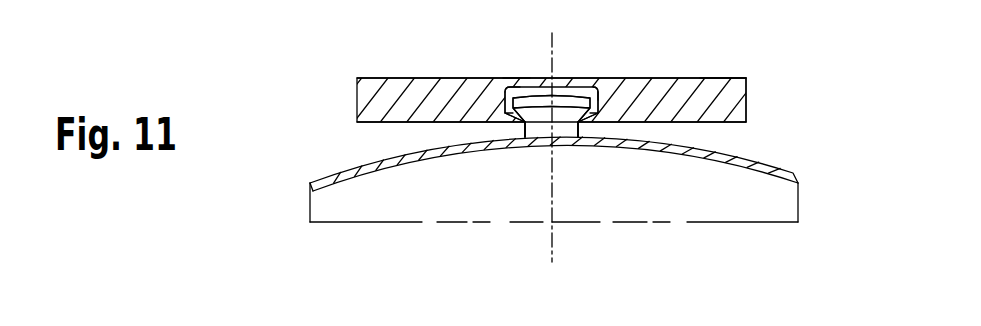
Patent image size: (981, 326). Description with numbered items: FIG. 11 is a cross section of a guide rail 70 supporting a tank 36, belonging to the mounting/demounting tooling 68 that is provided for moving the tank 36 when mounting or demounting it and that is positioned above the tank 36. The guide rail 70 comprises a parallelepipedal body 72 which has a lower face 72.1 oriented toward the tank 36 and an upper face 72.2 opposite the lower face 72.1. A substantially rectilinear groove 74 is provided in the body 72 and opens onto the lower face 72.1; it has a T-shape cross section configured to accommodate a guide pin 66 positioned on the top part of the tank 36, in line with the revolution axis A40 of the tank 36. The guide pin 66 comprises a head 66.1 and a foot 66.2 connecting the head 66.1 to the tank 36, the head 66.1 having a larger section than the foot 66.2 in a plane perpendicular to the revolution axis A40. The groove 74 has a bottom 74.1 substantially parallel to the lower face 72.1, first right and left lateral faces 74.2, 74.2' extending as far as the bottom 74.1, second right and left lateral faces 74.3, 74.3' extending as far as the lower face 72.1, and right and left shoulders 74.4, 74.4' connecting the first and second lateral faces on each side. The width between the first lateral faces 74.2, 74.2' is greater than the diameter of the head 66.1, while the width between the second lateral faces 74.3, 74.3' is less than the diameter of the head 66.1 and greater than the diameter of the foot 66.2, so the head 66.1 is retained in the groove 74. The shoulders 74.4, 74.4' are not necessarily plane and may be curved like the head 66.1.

The parallelepipedal body 72 is at (373, 110).
The lower face 72.1 is at (372, 128).
The upper face 72.2 is at (378, 79).
The groove 74 is at (612, 96).
The bottom 74.1 is at (517, 80).
The first right lateral face 74.2 is at (632, 62).
The first left lateral face 74.2' is at (462, 67).
The second right lateral face 74.3 is at (615, 186).
The second left lateral face 74.3' is at (492, 186).
The right shoulder 74.4 is at (653, 182).
The left shoulder 74.4' is at (451, 183).
The guide pin 66 is at (545, 116).
The head 66.1 is at (580, 90).
The foot 66.2 is at (534, 130).
The mounting/demounting tooling 68 is at (757, 70).
The guide rail 70 is at (749, 106).
The tank 36 is at (783, 164).
The revolution axis A40 is at (553, 211).